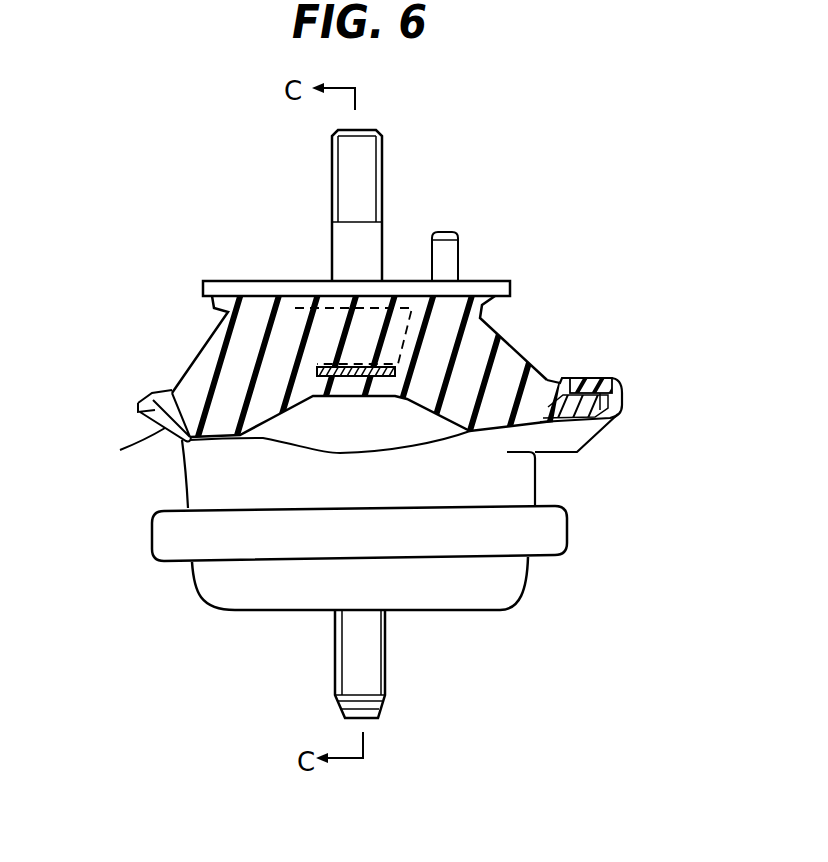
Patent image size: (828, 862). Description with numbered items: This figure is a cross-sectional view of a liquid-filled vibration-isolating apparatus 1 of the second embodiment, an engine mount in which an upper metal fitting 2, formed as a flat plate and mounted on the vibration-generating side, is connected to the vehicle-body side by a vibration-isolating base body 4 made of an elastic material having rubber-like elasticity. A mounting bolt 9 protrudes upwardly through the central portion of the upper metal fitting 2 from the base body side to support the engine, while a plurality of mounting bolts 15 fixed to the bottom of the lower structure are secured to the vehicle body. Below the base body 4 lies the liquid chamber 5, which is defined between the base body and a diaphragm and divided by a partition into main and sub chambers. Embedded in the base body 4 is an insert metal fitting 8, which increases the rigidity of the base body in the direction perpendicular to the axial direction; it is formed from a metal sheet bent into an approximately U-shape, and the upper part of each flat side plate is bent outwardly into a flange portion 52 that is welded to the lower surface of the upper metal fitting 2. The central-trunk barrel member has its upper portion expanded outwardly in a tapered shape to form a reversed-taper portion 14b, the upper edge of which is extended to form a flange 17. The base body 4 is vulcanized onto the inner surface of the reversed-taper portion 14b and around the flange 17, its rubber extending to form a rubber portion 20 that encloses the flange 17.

The liquid-filled vibration-isolating apparatus 1 is at (598, 553).
The upper metal fitting 2 is at (478, 289).
The vibration-isolating base body 4 is at (480, 368).
The liquid chamber 5 is at (327, 425).
The insert metal fitting 8 is at (358, 386).
The mounting bolt 9 is at (364, 180).
The reversed-taper portion 14b is at (145, 418).
The mounting bolts 15 is at (367, 667).
The flange 17 is at (590, 393).
The rubber portion 20 is at (620, 384).
The flange portion 52 is at (323, 297).